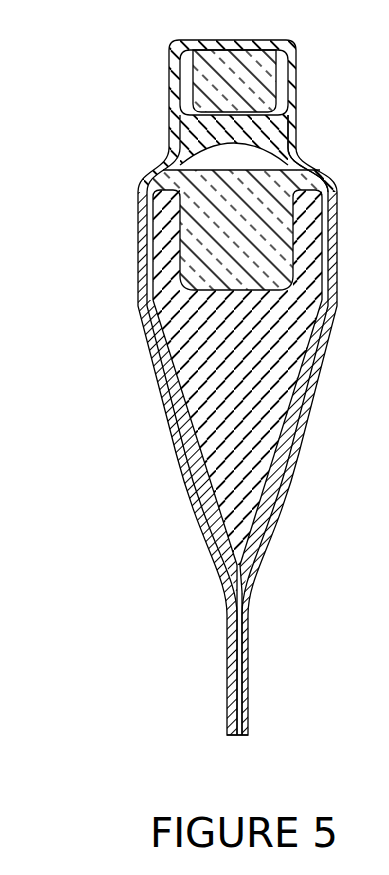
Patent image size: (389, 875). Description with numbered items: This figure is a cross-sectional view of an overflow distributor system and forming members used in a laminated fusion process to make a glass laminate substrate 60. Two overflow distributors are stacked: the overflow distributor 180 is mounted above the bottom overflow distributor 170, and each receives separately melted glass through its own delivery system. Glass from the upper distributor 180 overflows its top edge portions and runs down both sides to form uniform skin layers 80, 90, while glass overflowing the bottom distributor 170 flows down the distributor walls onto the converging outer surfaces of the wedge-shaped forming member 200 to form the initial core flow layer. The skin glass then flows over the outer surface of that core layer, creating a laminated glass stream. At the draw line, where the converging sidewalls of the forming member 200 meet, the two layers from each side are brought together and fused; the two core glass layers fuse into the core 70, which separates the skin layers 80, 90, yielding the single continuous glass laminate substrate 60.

The overflow distributor 180 is at (167, 75).
The overflow distributor 170 is at (143, 196).
The wedge-shaped forming member 200 is at (182, 393).
The skin layer 80 is at (228, 660).
The skin layer 90 is at (248, 682).
The glass laminate substrate 60 is at (224, 717).
The core 70 is at (245, 730).